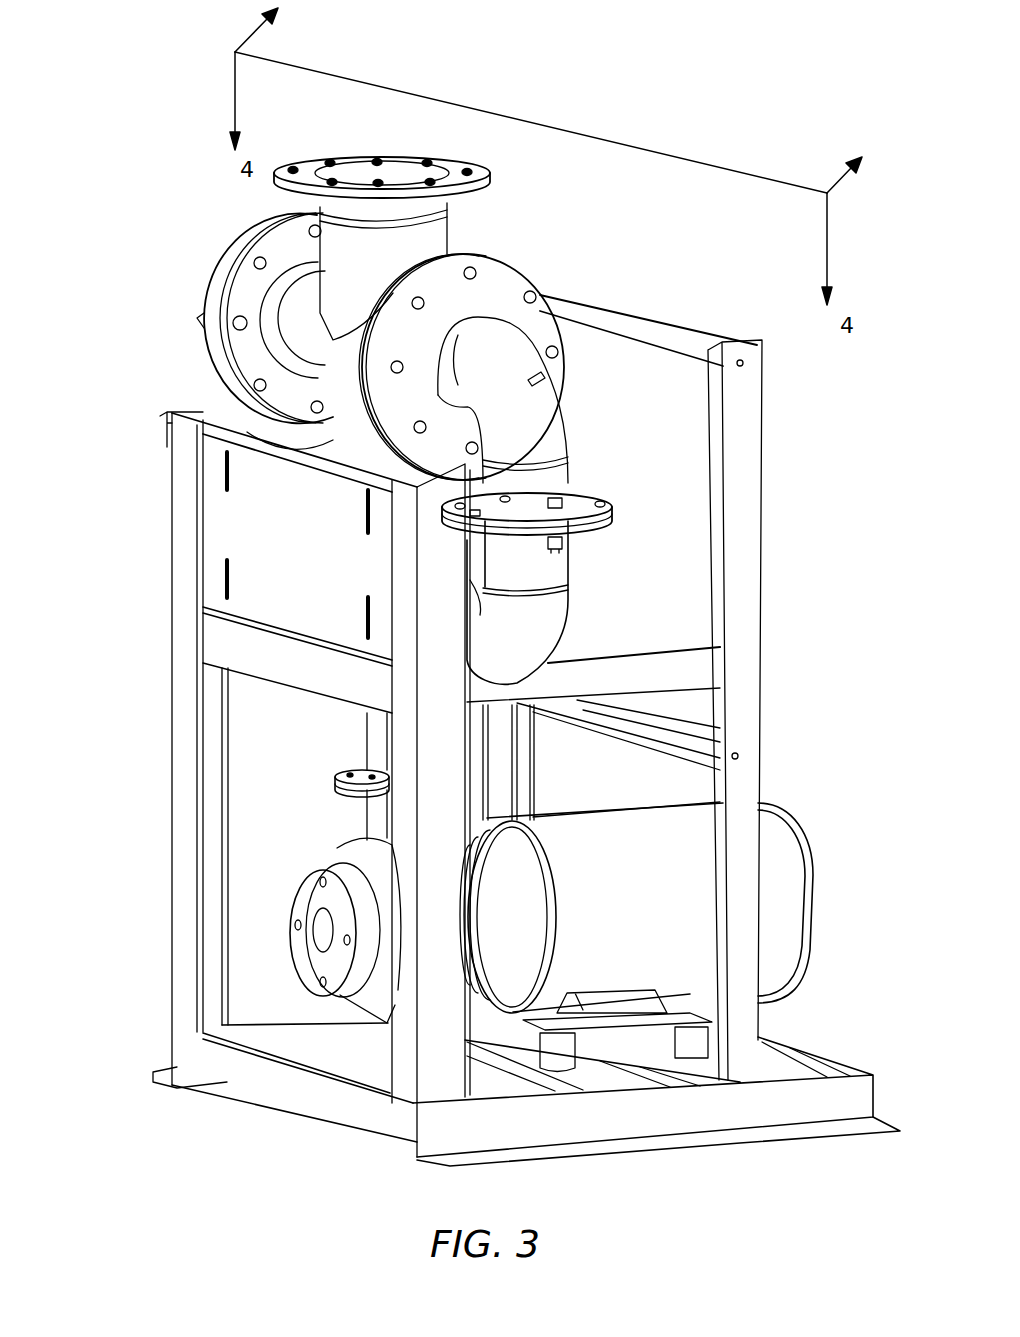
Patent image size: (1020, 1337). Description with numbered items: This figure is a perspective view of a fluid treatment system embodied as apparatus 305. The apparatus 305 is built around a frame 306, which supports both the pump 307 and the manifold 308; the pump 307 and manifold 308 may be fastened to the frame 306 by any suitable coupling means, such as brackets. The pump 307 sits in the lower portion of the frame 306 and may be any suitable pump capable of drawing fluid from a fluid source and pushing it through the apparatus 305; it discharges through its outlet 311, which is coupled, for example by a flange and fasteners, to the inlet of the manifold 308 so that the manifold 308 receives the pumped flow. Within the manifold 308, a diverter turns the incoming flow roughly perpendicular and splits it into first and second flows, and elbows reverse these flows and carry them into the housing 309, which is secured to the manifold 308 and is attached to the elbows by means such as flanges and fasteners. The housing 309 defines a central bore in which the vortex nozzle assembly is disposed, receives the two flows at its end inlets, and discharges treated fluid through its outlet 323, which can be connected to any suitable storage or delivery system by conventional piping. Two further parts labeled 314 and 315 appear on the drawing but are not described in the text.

The apparatus 305 is at (471, 634).
The frame 306 is at (526, 730).
The pump 307 is at (647, 917).
The manifold 308 is at (590, 493).
The housing 309 is at (440, 221).
The outlet 311 is at (376, 818).
The mounting tab 314 is at (170, 425).
The bolt 315 is at (568, 549).
The outlet 323 is at (376, 160).